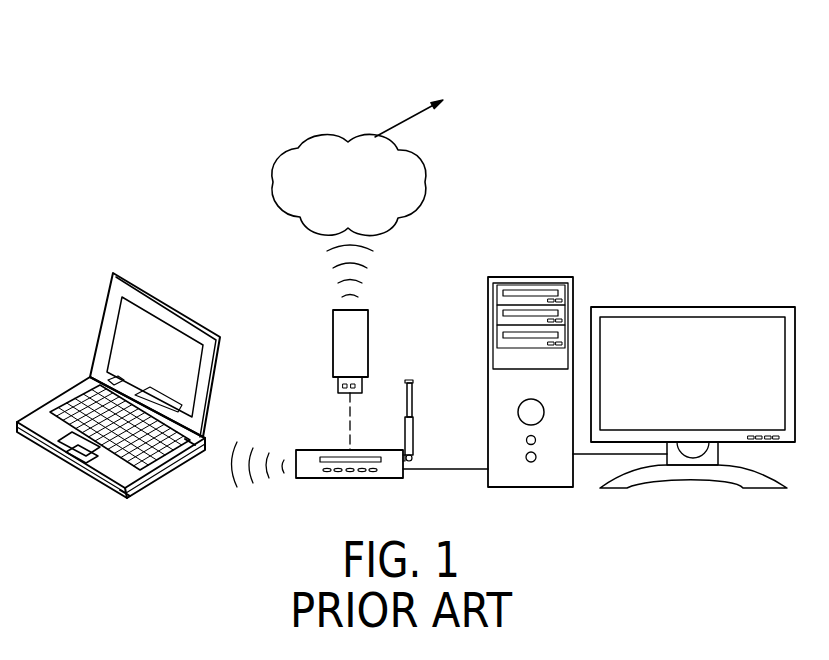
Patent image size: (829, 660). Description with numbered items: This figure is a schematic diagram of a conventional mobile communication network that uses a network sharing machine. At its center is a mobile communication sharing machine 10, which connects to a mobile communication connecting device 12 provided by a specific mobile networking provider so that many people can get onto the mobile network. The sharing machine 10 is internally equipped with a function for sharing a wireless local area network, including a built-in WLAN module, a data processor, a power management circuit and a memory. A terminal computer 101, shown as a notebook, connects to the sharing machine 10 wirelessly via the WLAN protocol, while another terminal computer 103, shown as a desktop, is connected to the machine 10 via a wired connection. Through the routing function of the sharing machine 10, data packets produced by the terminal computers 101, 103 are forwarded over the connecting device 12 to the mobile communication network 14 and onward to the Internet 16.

The mobile communication sharing machine 10 is at (312, 455).
The mobile communication connecting device 12 is at (358, 335).
The mobile communication network 14 is at (424, 173).
The Internet 16 is at (504, 77).
The terminal computer 101 is at (172, 316).
The terminal computer 103 is at (530, 277).